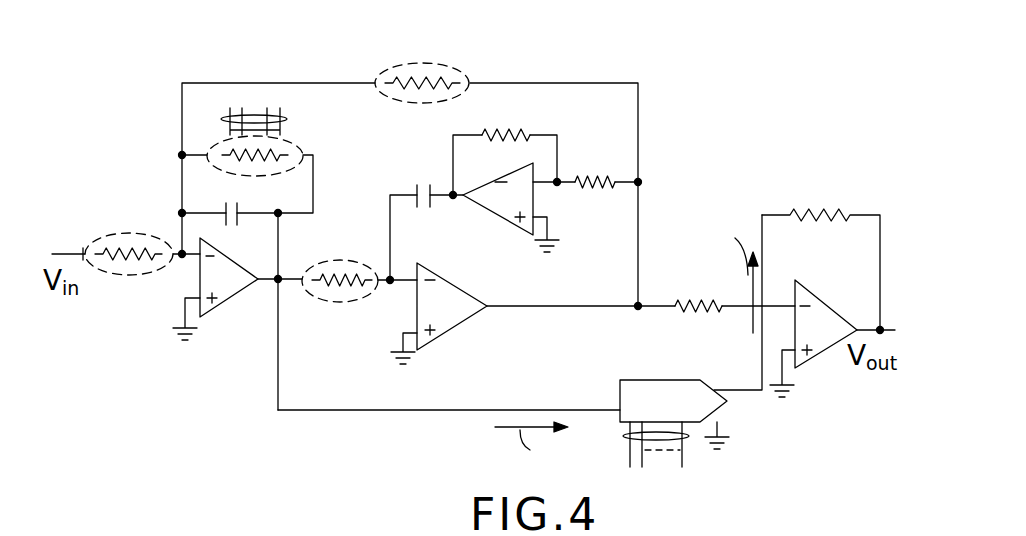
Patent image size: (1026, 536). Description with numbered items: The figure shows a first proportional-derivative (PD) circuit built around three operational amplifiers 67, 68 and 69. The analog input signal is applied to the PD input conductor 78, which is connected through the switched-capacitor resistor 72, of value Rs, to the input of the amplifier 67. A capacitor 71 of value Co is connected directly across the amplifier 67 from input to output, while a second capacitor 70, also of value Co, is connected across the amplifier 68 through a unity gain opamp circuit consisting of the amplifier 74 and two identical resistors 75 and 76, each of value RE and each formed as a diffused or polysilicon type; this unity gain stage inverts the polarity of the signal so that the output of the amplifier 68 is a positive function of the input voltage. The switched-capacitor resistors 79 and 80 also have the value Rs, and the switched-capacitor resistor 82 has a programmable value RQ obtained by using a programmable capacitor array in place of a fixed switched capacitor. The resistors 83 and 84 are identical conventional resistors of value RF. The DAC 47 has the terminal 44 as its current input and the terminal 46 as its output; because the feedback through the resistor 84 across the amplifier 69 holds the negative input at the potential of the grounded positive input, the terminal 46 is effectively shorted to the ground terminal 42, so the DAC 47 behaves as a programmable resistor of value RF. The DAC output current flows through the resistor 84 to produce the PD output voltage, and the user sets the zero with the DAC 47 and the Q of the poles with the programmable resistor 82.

The ground terminal 42 is at (740, 430).
The current input terminal 44 is at (600, 405).
The output terminal 46 is at (735, 385).
The DAC 47 is at (660, 375).
The operational amplifier 67 is at (232, 287).
The operational amplifier 68 is at (452, 312).
The operational amplifier 69 is at (828, 336).
The capacitor 70 is at (420, 185).
The capacitor 71 is at (227, 205).
The switched-capacitor resistor 72 is at (144, 232).
The amplifier 74 is at (526, 210).
The resistor 75 is at (507, 135).
The resistor 76 is at (595, 184).
The PD input conductor 78 is at (64, 250).
The switched-capacitor resistor 79 is at (360, 258).
The switched-capacitor resistor 80 is at (446, 60).
The switched-capacitor resistor 82 is at (296, 141).
The resistor 83 is at (713, 290).
The resistor 84 is at (825, 206).